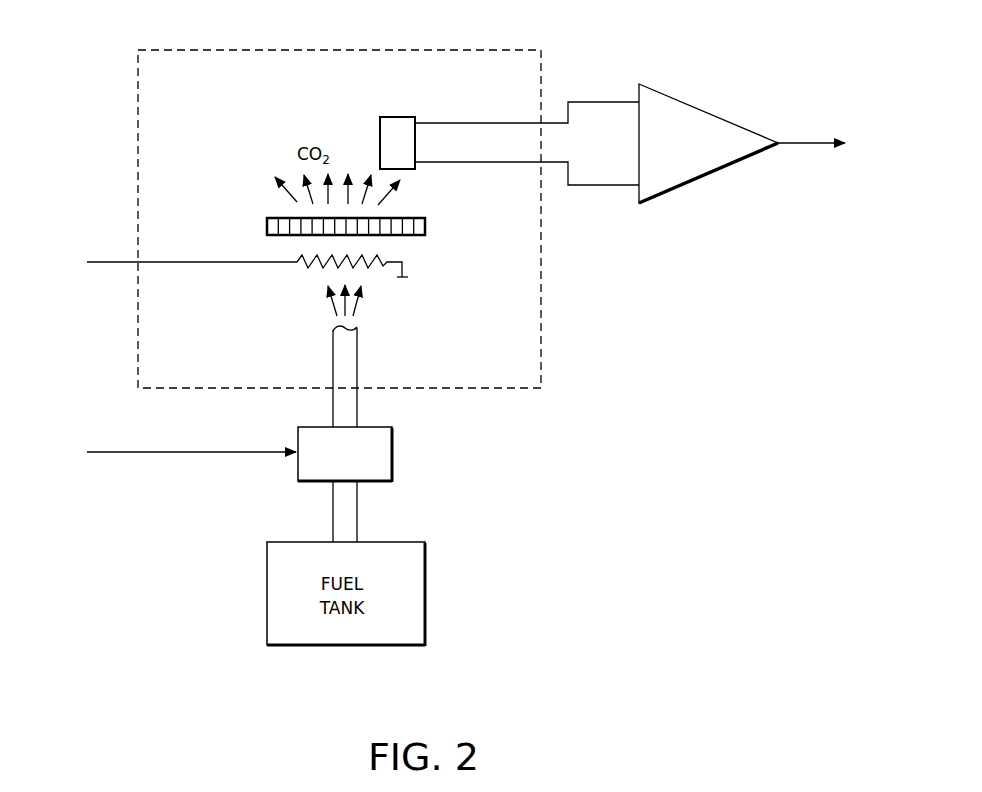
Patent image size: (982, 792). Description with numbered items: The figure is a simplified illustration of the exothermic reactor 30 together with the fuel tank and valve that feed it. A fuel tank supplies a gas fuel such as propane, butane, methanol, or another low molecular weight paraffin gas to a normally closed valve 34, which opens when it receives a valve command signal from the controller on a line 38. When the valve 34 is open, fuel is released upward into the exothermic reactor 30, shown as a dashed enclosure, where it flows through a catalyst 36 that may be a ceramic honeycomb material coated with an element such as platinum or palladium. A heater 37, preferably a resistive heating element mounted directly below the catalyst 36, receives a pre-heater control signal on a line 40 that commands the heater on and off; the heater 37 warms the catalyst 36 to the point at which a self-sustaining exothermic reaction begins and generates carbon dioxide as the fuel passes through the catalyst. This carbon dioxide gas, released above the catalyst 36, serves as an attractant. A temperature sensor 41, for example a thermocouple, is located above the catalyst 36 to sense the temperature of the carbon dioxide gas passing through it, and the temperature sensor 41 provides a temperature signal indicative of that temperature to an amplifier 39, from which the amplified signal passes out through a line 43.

The exothermic reactor 30 is at (256, 50).
The normally closed valve 34 is at (395, 455).
The catalyst 36 is at (427, 224).
The heater 37 is at (303, 267).
The line 38 is at (145, 454).
The amplifier 39 is at (685, 102).
The line 40 is at (106, 263).
The temperature sensor 41 is at (397, 117).
The line 43 is at (803, 147).